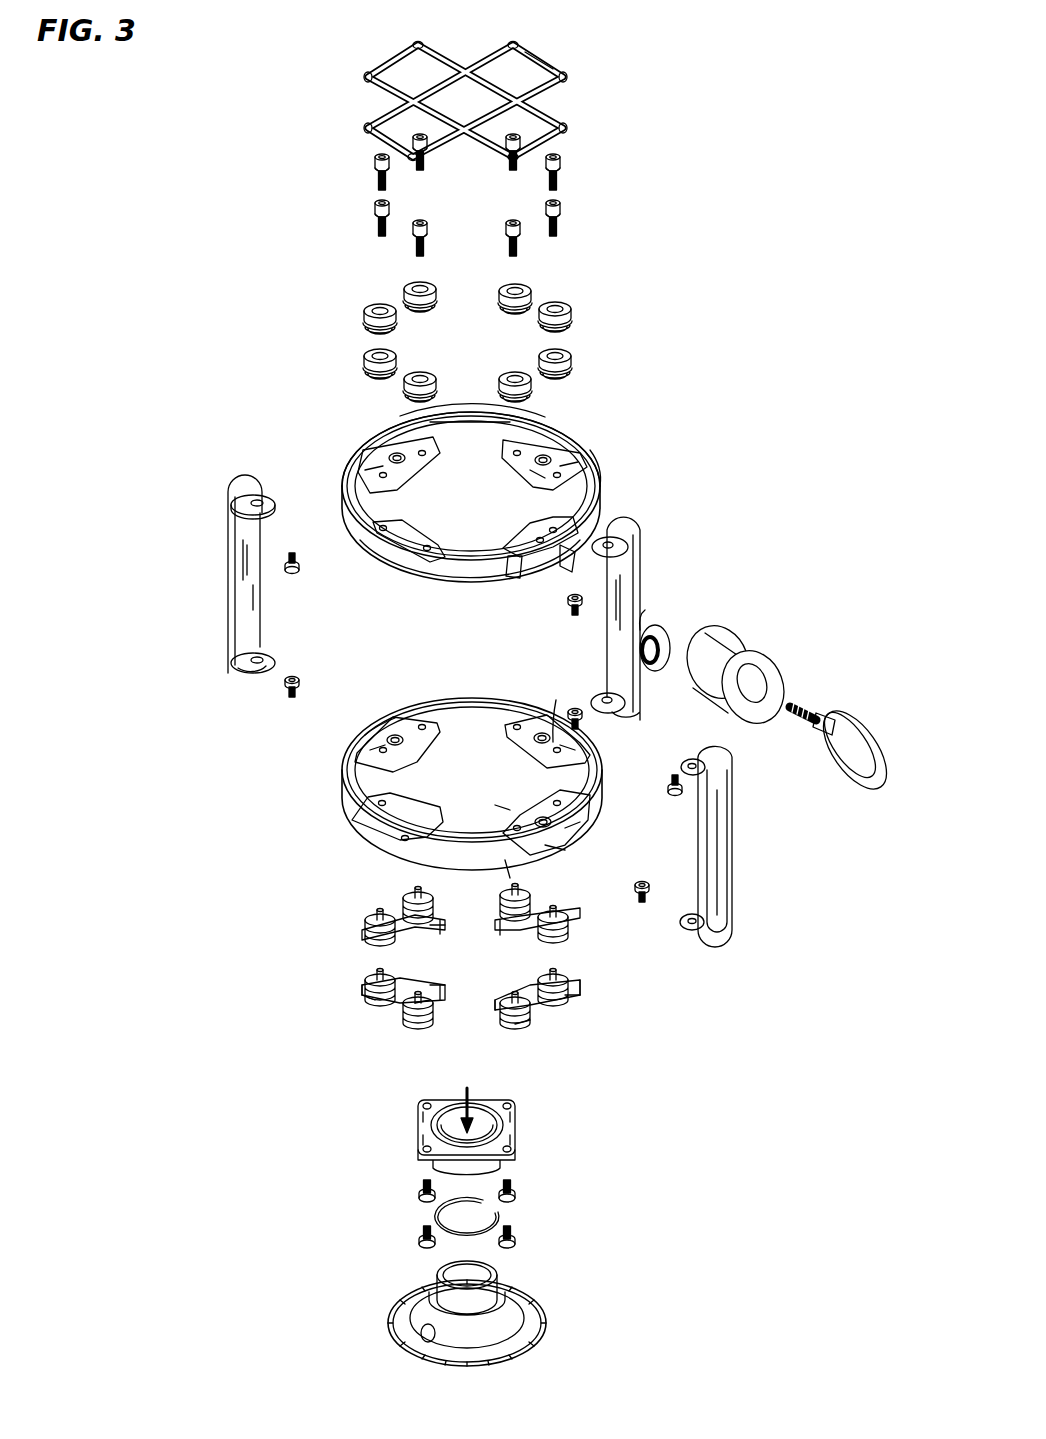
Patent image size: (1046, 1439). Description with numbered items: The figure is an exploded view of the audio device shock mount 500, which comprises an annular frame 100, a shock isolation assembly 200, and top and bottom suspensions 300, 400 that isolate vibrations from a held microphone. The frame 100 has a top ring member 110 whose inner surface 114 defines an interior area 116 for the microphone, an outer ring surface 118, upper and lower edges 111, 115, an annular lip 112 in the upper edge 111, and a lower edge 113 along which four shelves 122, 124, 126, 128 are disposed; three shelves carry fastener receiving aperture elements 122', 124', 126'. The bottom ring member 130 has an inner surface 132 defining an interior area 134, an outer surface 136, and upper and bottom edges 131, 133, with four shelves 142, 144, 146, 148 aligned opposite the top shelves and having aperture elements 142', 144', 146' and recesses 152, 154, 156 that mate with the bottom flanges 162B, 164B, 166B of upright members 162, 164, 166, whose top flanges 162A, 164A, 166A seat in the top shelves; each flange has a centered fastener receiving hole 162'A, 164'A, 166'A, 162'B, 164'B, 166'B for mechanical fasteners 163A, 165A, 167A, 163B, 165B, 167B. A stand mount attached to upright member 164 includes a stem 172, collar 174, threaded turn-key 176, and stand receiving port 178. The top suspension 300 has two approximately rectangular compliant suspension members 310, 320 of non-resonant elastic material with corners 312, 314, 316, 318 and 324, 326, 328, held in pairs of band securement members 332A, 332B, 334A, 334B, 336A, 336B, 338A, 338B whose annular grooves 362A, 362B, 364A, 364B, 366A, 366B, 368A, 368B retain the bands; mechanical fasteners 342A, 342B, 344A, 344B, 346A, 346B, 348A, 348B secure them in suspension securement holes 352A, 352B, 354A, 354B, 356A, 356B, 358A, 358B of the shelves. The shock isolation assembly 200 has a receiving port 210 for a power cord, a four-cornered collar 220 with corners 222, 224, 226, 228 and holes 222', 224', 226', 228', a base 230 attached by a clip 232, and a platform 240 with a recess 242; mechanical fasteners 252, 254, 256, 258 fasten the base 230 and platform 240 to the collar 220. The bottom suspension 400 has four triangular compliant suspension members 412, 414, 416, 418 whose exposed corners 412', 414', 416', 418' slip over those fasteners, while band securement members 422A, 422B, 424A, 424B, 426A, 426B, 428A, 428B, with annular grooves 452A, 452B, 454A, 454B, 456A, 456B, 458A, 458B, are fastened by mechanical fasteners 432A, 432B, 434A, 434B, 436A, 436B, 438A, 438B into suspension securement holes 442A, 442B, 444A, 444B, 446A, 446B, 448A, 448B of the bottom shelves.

The audio device shock mount 500 is at (760, 128).
The top suspension 300 is at (225, 40).
The compliant suspension member 310 is at (488, 107).
The corner 312 is at (515, 44).
The corner 314 is at (416, 44).
The corner 316 is at (573, 128).
The corner 318 is at (508, 160).
The compliant suspension member 320 is at (547, 55).
The corner 324 is at (567, 78).
The corner 326 is at (418, 163).
The corner 328 is at (365, 129).
The mechanical fastener 342A is at (374, 166).
The mechanical fastener 342B is at (430, 136).
The mechanical fastener 344A is at (522, 142).
The mechanical fastener 344B is at (561, 166).
The mechanical fastener 346A is at (562, 228).
The mechanical fastener 346B is at (523, 247).
The mechanical fastener 348A is at (432, 247).
The mechanical fastener 348B is at (373, 226).
The band securement member 332A is at (347, 320).
The band securement member 332B is at (410, 287).
The band securement member 334A is at (513, 295).
The band securement member 334B is at (585, 307).
The band securement member 336A is at (593, 360).
The band securement member 336B is at (545, 366).
The band securement member 338A is at (416, 384).
The band securement member 338B is at (378, 357).
The annular groove 362A is at (363, 327).
The annular groove 362B is at (443, 287).
The annular groove 364A is at (500, 307).
The annular groove 364B is at (573, 323).
The annular groove 366A is at (571, 368).
The annular groove 366B is at (531, 390).
The annular groove 368A is at (406, 395).
The annular groove 368B is at (366, 371).
The annular frame 100 is at (126, 410).
The top ring member 110 is at (700, 440).
The top ring member upper edge 111 is at (598, 490).
The top ring member annular lip 112 is at (590, 473).
The lower edge of inner surface 113 is at (473, 440).
The top ring inner surface 114 is at (469, 445).
The top ring member bottom edge 115 is at (358, 512).
The top ring member interior area 116 is at (494, 514).
The outer ring surface 118 is at (473, 583).
The top ring member shelf 128 is at (450, 560).
The top ring member shelf 122 is at (367, 459).
The fastener receiving aperture element 122' is at (340, 457).
The top ring member shelf 124 is at (558, 449).
The fastener receiving aperture element 124' is at (598, 447).
The top ring member shelf 126 is at (414, 572).
The fastener receiving aperture element 126' is at (551, 580).
The recess 154 is at (545, 485).
The suspension securement hole 352A is at (380, 476).
The suspension securement hole 352B is at (418, 452).
The suspension securement hole 354A is at (521, 452).
The suspension securement hole 354B is at (560, 475).
The suspension securement hole 356A is at (552, 556).
The suspension securement hole 356B is at (523, 560).
The suspension securement hole 358A is at (427, 551).
The suspension securement hole 358B is at (380, 532).
The upright member 162 is at (233, 577).
The top flange 162A is at (214, 472).
The bottom flange 162B is at (276, 672).
The fastener receiving hole 162'A is at (202, 505).
The fastener receiving hole 162'B is at (288, 639).
The mechanical fastener 163A is at (293, 553).
The mechanical fastener 163B is at (300, 684).
The upright member 164 is at (627, 625).
The top flange 164A is at (668, 543).
The bottom flange 164B is at (600, 692).
The fastener receiving hole 164'A is at (664, 555).
The fastener receiving hole 164'B is at (561, 677).
The mechanical fastener 165A is at (580, 612).
The mechanical fastener 165B is at (584, 728).
The upright member 166 is at (729, 874).
The top flange 166A is at (746, 788).
The bottom flange 166B is at (706, 931).
The fastener receiving hole 166'A is at (748, 792).
The fastener receiving hole 166'B is at (673, 892).
The mechanical fastener 167A is at (680, 790).
The mechanical fastener 167B is at (643, 905).
The stem 172 is at (665, 632).
The collar 174 is at (737, 645).
The threaded turn-key 176 is at (844, 756).
The stand receiving port 178 is at (858, 793).
The bottom ring member 130 is at (250, 820).
The bottom ring member upper edge 131 is at (603, 782).
The bottom ring member inner surface 132 is at (485, 729).
The bottom ring member bottom edge 133 is at (443, 718).
The bottom ring member interior area 134 is at (456, 784).
The bottom ring member outer surface 136 is at (593, 806).
The bottom ring member shelf 142 is at (359, 716).
The fastener receiving aperture element 142' is at (385, 710).
The bottom ring member shelf 144 is at (523, 716).
The fastener receiving aperture element 144' is at (542, 713).
The bottom ring member shelf 146 is at (599, 811).
The fastener receiving aperture element 146' is at (605, 833).
The bottom ring member shelf 148 is at (361, 829).
The recess 152 is at (378, 733).
The recess 156 is at (568, 852).
The suspension securement hole 442A is at (379, 750).
The suspension securement hole 442B is at (422, 724).
The suspension securement hole 444A is at (515, 724).
The suspension securement hole 444B is at (553, 752).
The suspension securement hole 446A is at (561, 805).
The suspension securement hole 446B is at (520, 832).
The suspension securement hole 448A is at (418, 827).
The suspension securement hole 448B is at (378, 803).
The mechanical fastener 434A is at (497, 808).
The band securement member 424A is at (506, 870).
The bottom suspension 400 is at (221, 878).
The compliant suspension member 412 is at (373, 914).
The exposed corner 412' is at (464, 938).
The compliant suspension member 414 is at (564, 928).
The exposed corner 414' is at (510, 946).
The compliant suspension member 416 is at (585, 1029).
The exposed corner 416' is at (477, 1008).
The compliant suspension member 418 is at (352, 1021).
The exposed corner 418' is at (449, 1021).
The band securement member 422A is at (370, 938).
The band securement member 422B is at (413, 888).
The band securement member 424B is at (545, 935).
The band securement member 426A is at (570, 1000).
The band securement member 426B is at (532, 1022).
The band securement member 428A is at (404, 1010).
The band securement member 428B is at (364, 985).
The mechanical fastener 432A is at (326, 934).
The mechanical fastener 432B is at (361, 896).
The mechanical fastener 434B is at (567, 923).
The mechanical fastener 436A is at (617, 1006).
The mechanical fastener 436B is at (547, 1032).
The mechanical fastener 438A is at (376, 1037).
The mechanical fastener 438B is at (324, 1008).
The annular groove 452A is at (364, 975).
The annular groove 452B is at (425, 988).
The annular groove 454A is at (441, 918).
The annular groove 454B is at (585, 985).
The annular groove 456A is at (570, 1005).
The annular groove 456B is at (532, 1030).
The annular groove 458A is at (420, 1028).
The annular groove 458B is at (367, 1008).
The shock isolation assembly 200 is at (737, 1065).
The receiving port 210 is at (467, 1102).
The collar 220 is at (469, 1149).
The corner 222 is at (355, 1108).
The fastener receiving hole 222' is at (366, 1128).
The corner 224 is at (581, 1093).
The fastener receiving hole 224' is at (562, 1117).
The corner 226 is at (544, 1161).
The fastener receiving hole 226' is at (561, 1138).
The corner 228 is at (369, 1183).
The fastener receiving hole 228' is at (362, 1159).
The base 230 is at (499, 1287).
The clip 232 is at (500, 1212).
The platform 240 is at (492, 1316).
The recess 242 is at (423, 1340).
The mechanical fastener 252 is at (418, 1200).
The mechanical fastener 254 is at (516, 1199).
The mechanical fastener 256 is at (516, 1243).
The mechanical fastener 258 is at (418, 1244).